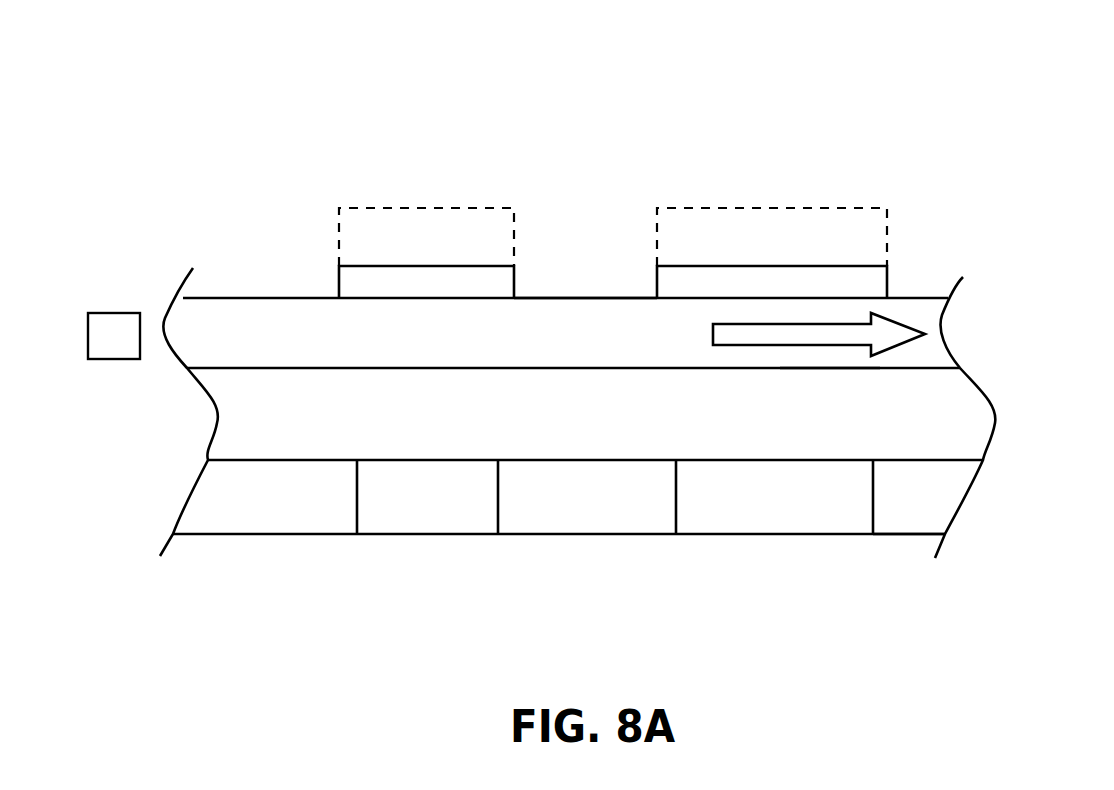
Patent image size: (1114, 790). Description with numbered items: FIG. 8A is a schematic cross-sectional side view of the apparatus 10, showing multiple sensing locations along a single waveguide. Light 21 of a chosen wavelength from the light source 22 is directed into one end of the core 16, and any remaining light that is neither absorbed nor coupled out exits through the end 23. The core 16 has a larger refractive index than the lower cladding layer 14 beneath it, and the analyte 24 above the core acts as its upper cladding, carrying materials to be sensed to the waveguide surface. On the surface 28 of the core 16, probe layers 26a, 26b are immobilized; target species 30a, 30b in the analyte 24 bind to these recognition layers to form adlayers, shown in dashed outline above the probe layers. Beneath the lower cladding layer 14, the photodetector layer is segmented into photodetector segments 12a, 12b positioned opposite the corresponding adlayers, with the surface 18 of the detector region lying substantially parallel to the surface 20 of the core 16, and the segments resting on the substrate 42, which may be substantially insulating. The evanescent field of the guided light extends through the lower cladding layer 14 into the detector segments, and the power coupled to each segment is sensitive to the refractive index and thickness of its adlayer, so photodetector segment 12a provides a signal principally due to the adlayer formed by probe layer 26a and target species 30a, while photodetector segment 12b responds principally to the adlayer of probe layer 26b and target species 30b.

The apparatus 10 is at (938, 150).
The photodetector segment 12a is at (413, 534).
The photodetector segment 12b is at (757, 534).
The lower cladding layer 14 is at (522, 441).
The core 16 is at (348, 349).
The surface 18 is at (918, 460).
The surface 20 is at (828, 369).
The light 21 is at (717, 333).
The light source 22 is at (100, 403).
The end 23 is at (1023, 334).
The analyte 24 is at (642, 104).
The probe layer 26a is at (338, 283).
The probe layer 26b is at (950, 205).
The surface 28 is at (597, 298).
The target species 30a is at (487, 209).
The target species 30b is at (722, 160).
The substrate 42 is at (583, 655).